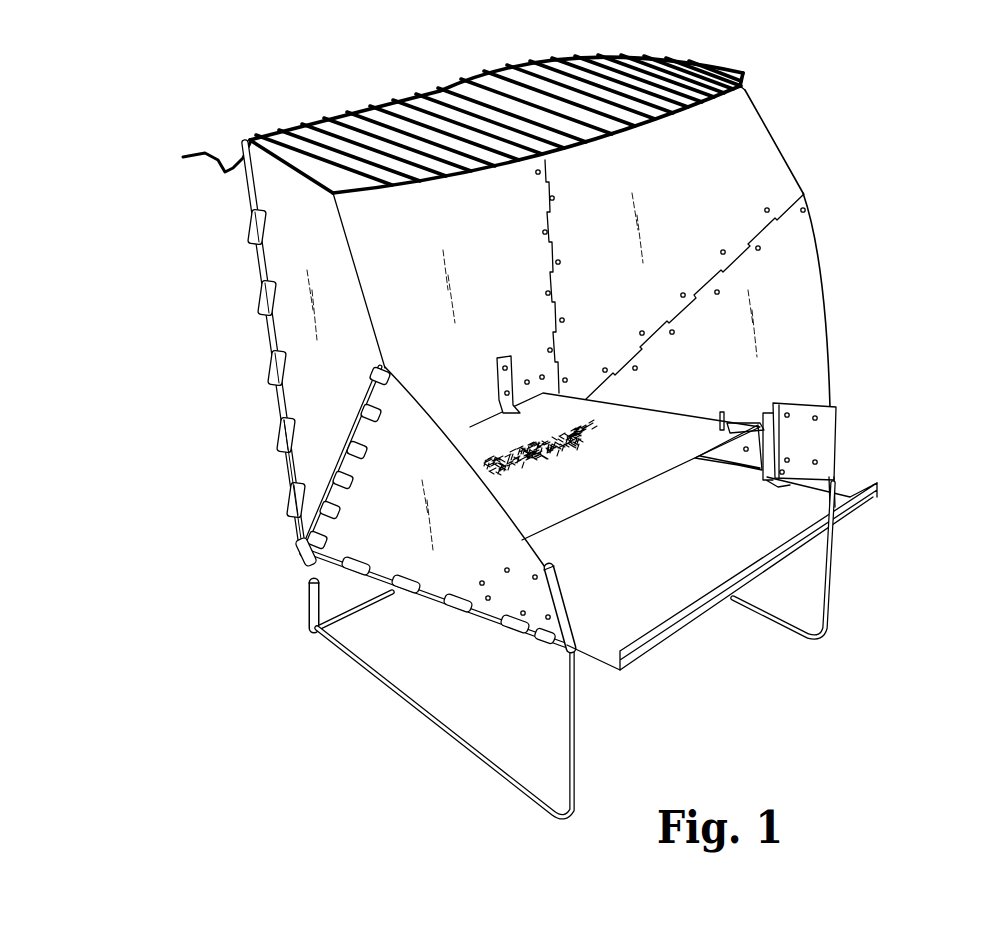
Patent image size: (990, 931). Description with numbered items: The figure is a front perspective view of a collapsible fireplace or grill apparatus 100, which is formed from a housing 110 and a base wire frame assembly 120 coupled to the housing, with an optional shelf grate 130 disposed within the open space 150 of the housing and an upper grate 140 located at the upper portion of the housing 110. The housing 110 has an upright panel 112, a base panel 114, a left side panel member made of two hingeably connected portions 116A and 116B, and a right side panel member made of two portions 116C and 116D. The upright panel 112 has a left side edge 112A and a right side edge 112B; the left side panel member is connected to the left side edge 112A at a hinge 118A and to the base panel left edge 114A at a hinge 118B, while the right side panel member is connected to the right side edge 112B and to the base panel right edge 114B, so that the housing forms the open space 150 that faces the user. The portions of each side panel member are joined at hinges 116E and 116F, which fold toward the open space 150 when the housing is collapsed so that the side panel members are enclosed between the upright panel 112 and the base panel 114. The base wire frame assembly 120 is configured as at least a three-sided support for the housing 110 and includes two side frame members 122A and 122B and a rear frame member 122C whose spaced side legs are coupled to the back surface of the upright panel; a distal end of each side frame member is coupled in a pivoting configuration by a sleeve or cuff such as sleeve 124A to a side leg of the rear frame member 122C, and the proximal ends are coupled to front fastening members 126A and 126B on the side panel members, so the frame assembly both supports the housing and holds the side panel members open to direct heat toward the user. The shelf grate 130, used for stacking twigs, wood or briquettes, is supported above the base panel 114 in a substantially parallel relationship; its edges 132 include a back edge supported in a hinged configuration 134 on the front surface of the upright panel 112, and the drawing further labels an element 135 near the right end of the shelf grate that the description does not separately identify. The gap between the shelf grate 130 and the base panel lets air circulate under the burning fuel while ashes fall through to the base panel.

The collapsible fireplace or grill apparatus 100 is at (156, 251).
The housing 110 is at (272, 322).
The upright panel 112 is at (493, 212).
The left side edge 112A is at (368, 278).
The right side edge 112B is at (553, 280).
The base panel 114 is at (766, 599).
The base panel left edge 114A is at (606, 671).
The base panel right edge 114B is at (878, 484).
The left side panel member portion 116A is at (300, 405).
The left side panel member portion 116B is at (312, 582).
The right side panel member portion 116C is at (773, 137).
The right side panel member portion 116D is at (830, 292).
The hinge 116E is at (368, 453).
The hinge 116F is at (742, 250).
The hinge 118A is at (282, 463).
The hinge 118B is at (407, 600).
The base wire frame assembly 120 is at (401, 700).
The side frame member 122A is at (480, 757).
The side frame member 122B is at (827, 603).
The rear frame member 122C is at (365, 618).
The sleeve or cuff 124A is at (308, 615).
The front fastening member 126A is at (578, 620).
The front fastening member 126B is at (840, 443).
The shelf grate 130 is at (617, 502).
The shelf grate edge 132 is at (670, 466).
The hinged configuration 134 is at (497, 388).
The shelf hinge 135 is at (752, 420).
The upper grate 140 is at (480, 83).
The open space 150 is at (795, 335).